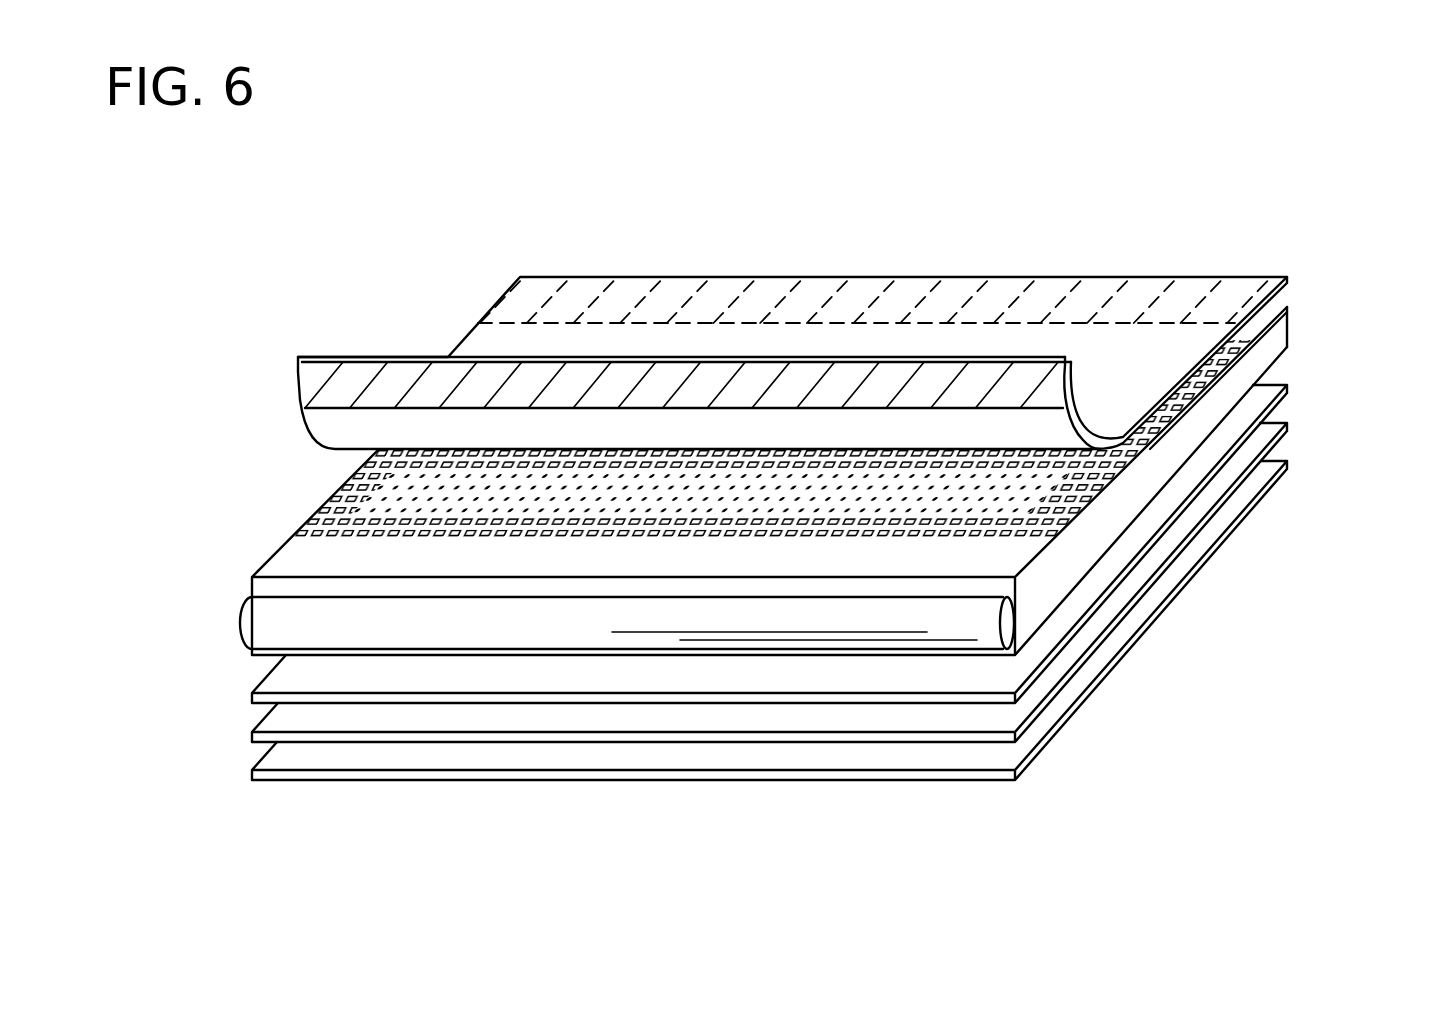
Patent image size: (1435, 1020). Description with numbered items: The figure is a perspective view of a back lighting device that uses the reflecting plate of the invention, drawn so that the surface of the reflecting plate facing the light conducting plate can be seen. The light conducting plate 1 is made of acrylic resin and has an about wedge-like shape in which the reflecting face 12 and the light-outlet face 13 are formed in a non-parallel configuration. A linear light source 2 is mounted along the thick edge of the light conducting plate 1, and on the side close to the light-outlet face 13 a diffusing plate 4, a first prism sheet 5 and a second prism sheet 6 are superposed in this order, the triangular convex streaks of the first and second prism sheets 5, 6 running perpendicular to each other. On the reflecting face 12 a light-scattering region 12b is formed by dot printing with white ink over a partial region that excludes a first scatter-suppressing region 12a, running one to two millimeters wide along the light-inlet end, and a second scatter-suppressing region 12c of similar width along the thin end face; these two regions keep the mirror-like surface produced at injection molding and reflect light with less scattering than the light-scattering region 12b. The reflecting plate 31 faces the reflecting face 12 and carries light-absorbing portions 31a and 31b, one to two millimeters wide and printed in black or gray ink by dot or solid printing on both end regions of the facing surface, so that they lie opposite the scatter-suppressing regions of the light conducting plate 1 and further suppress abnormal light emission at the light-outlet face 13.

The light conducting plate 1 is at (248, 528).
The linear light source 2 is at (258, 624).
The diffusing plate 4 is at (252, 694).
The first prism sheet 5 is at (252, 736).
The second prism sheet 6 is at (313, 782).
The reflecting face 12 is at (337, 498).
The first scatter-suppressing region 12a is at (1010, 555).
The light-scattering region 12b is at (1040, 493).
The second scatter-suppressing region 12c is at (1262, 318).
The light-outlet face 13 is at (1289, 355).
The reflecting plate 31 is at (352, 326).
The light-absorbing portion 31a is at (310, 380).
The light-absorbing portion 31b is at (1147, 292).